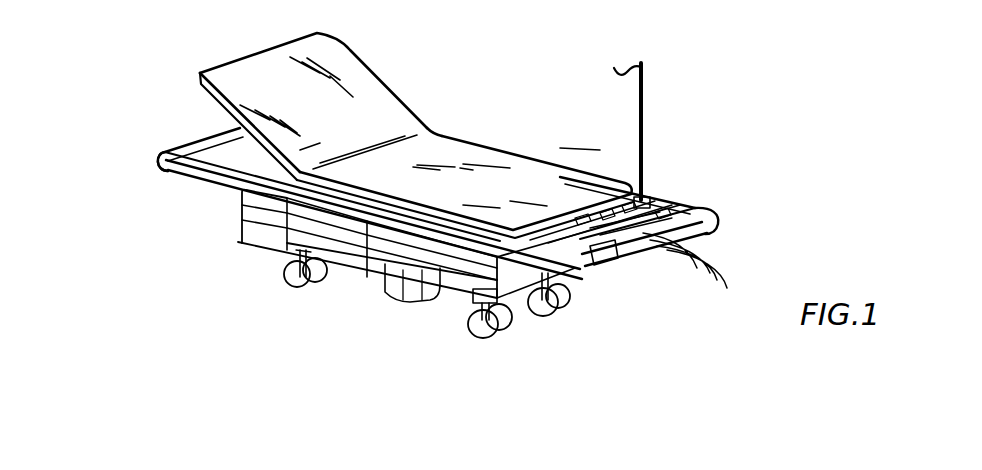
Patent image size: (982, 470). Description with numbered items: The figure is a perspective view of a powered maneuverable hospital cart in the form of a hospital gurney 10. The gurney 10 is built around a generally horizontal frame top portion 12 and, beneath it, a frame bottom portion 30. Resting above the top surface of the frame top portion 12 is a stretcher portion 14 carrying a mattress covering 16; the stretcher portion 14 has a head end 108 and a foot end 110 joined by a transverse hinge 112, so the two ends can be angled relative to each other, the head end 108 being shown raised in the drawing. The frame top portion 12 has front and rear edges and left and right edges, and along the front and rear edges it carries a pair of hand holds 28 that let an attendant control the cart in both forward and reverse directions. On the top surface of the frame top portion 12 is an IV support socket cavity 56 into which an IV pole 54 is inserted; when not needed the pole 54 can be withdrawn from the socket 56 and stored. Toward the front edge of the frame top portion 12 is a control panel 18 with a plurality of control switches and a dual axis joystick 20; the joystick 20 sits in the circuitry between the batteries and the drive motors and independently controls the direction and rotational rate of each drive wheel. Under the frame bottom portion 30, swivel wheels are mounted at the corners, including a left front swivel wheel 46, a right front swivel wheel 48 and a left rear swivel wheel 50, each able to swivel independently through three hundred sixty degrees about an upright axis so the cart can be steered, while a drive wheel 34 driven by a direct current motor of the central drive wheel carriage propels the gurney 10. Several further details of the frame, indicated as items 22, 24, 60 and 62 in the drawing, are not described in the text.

The hospital gurney 10 is at (158, 68).
The frame top portion 12 is at (188, 177).
The stretcher portion 14 is at (190, 134).
The mattress covering 16 is at (313, 98).
The control panel 18 is at (470, 298).
The joystick 20 is at (712, 238).
The slots 22 is at (615, 217).
The straps 24 is at (690, 276).
The hand holds 28 is at (207, 133).
The frame bottom portion 30 is at (245, 212).
The drive wheel 34 is at (393, 282).
The left front swivel wheel 46 is at (505, 325).
The right front swivel wheel 48 is at (555, 310).
The left rear swivel wheel 50 is at (292, 291).
The IV pole 54 is at (650, 80).
The IV support socket cavity 56 is at (658, 200).
The base frame 60 is at (243, 240).
The bracket 62 is at (580, 270).
The head end 108 is at (533, 177).
The foot end 110 is at (343, 67).
The transverse hinge 112 is at (433, 128).